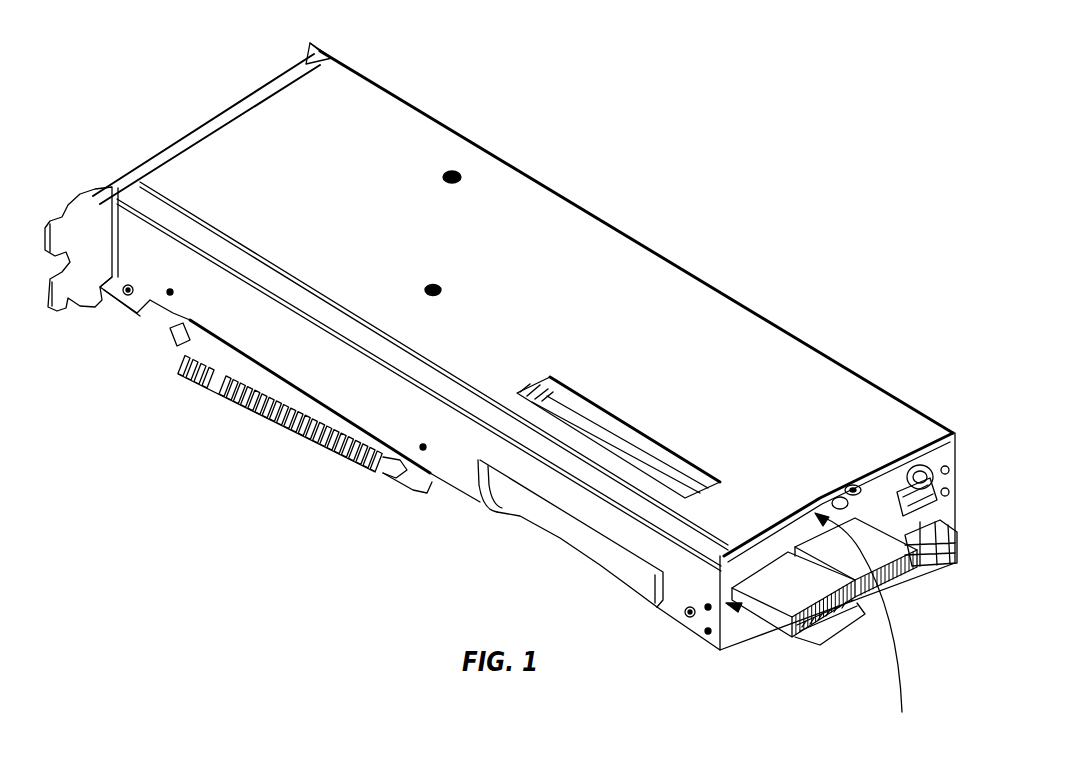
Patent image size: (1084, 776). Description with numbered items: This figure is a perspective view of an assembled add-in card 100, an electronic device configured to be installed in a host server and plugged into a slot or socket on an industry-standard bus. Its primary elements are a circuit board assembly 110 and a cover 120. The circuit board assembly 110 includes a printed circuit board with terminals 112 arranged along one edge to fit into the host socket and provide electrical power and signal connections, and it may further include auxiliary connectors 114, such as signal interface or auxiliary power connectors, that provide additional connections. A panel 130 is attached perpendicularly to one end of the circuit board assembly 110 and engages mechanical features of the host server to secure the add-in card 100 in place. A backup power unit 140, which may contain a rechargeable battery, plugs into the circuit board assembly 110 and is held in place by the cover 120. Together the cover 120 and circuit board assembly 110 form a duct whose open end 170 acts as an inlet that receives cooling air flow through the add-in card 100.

The add-in card 100 is at (638, 146).
The circuit board assembly 110 is at (747, 623).
The terminals 112 is at (250, 400).
The auxiliary connectors 114 is at (840, 618).
The cover 120 is at (518, 305).
The panel 130 is at (108, 248).
The backup power unit 140 is at (570, 528).
The open end 170 is at (866, 625).